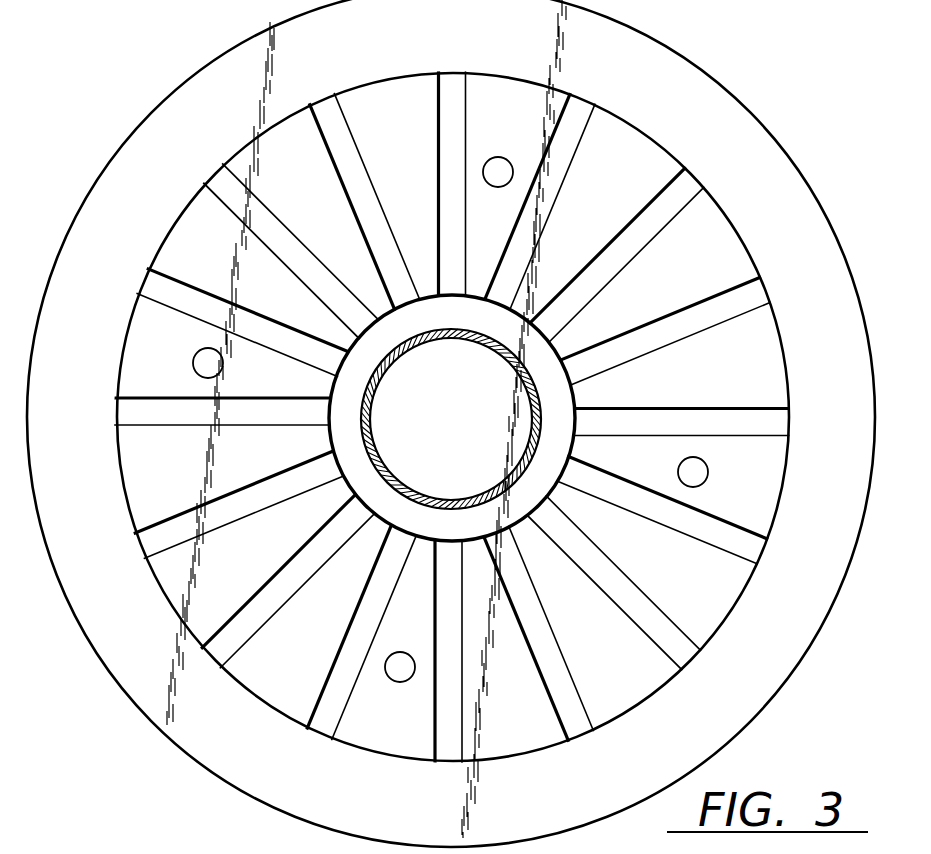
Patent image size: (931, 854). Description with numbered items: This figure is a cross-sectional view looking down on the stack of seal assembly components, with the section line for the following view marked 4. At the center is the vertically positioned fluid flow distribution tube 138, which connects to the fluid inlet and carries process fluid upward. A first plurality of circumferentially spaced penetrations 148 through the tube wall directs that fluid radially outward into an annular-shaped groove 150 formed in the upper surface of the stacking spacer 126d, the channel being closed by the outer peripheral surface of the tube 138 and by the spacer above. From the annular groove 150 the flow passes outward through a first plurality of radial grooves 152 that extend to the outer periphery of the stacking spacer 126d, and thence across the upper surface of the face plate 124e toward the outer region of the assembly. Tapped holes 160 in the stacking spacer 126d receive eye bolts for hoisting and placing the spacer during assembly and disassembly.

The face plate 124e is at (767, 150).
The stacking spacer 126d is at (277, 714).
The radial grooves 152 is at (117, 425).
The annular-shaped groove 150 is at (340, 440).
The circumferentially spaced penetrations 148 is at (516, 369).
The fluid flow distribution tube 138 is at (492, 486).
The tapped holes 160 is at (499, 157).
The section line 4- 4 is at (128, 275).